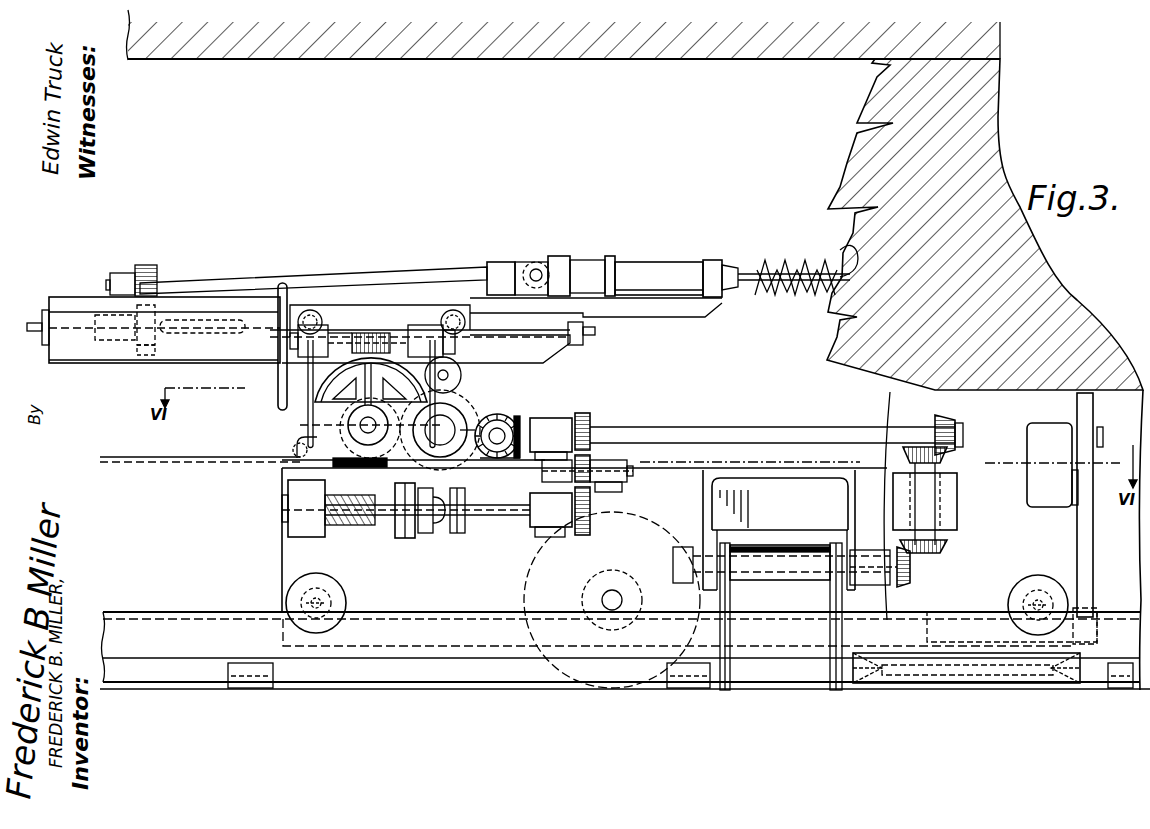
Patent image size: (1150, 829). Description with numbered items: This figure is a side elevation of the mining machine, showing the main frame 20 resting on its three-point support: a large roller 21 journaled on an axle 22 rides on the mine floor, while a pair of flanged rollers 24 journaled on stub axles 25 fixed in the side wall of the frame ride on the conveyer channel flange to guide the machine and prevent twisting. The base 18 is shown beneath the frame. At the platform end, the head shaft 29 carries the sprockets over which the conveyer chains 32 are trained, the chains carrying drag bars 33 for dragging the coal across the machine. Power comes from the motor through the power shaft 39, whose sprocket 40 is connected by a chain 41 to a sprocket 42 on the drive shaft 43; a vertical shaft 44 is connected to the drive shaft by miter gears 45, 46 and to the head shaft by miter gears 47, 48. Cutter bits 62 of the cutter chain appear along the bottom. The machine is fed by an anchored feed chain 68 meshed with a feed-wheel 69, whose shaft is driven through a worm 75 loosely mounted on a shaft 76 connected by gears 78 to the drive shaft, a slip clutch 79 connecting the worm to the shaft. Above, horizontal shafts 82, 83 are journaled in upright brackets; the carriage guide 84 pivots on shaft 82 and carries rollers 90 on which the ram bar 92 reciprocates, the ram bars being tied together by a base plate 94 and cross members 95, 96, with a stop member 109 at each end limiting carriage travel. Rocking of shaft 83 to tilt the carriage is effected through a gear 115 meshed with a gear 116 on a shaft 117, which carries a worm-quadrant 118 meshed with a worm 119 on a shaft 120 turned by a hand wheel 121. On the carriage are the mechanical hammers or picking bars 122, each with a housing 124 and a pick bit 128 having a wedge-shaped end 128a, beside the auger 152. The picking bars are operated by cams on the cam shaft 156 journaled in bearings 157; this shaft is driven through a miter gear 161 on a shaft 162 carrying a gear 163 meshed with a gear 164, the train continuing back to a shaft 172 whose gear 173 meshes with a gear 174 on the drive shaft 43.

The base 18 is at (146, 625).
The main frame 20 is at (655, 480).
The large roller 21 is at (528, 598).
The axle 22 is at (612, 600).
The flanged or grooved rollers 24 is at (340, 598).
The stub axles 25 is at (316, 603).
The head shaft 29 is at (672, 563).
The conveyer chains 32 is at (822, 588).
The drag bars 33 is at (780, 546).
The power shaft 39 is at (928, 622).
The sprocket 40 is at (1088, 614).
The chain 41 is at (1090, 562).
The sprocket 42 is at (1099, 430).
The drive shaft 43 is at (775, 437).
The vertical shaft 44 is at (935, 510).
The miter gear 45 is at (940, 415).
The miter gear 46 is at (915, 450).
The miter gear 47 is at (945, 548).
The miter gear 48 is at (912, 585).
The cutter bits 62 is at (858, 685).
The feed chain 68 is at (168, 460).
The feed-wheel 69 is at (345, 467).
The worm 75 is at (350, 525).
The shaft 76 is at (290, 510).
The gears 78 is at (585, 414).
The slip clutch 79 is at (432, 530).
The horizontal shaft 82 is at (447, 372).
The horizontal shaft 83 is at (447, 420).
The carriage guide member 84 is at (468, 332).
The rollers 90 is at (312, 312).
The ram bar 92 is at (55, 298).
The base plate 94 is at (690, 305).
The cross member 95 is at (715, 265).
The cross member 96 is at (125, 290).
The stop member 109 is at (50, 345).
The gear 115 is at (467, 423).
The gear 116 is at (300, 445).
The shaft 117 is at (363, 425).
The worm-quadrant 118 is at (392, 365).
The worm 119 is at (370, 335).
The shaft 120 is at (340, 340).
The hand wheel 121 is at (280, 382).
The mechanical hammers or picking bars 122 is at (655, 265).
The housing 124 is at (585, 265).
The pick bit 128 is at (778, 290).
The wedge-shaped end 128a is at (852, 254).
The auger 152 is at (790, 268).
The cam shaft 156 is at (540, 272).
The bearings 157 is at (538, 268).
The miter gear 161 is at (523, 262).
The shaft 162 is at (222, 282).
The gear 163 is at (147, 265).
The gear 164 is at (145, 345).
The shaft 172 is at (498, 460).
The gear 173 is at (513, 410).
The gear 174 is at (520, 416).